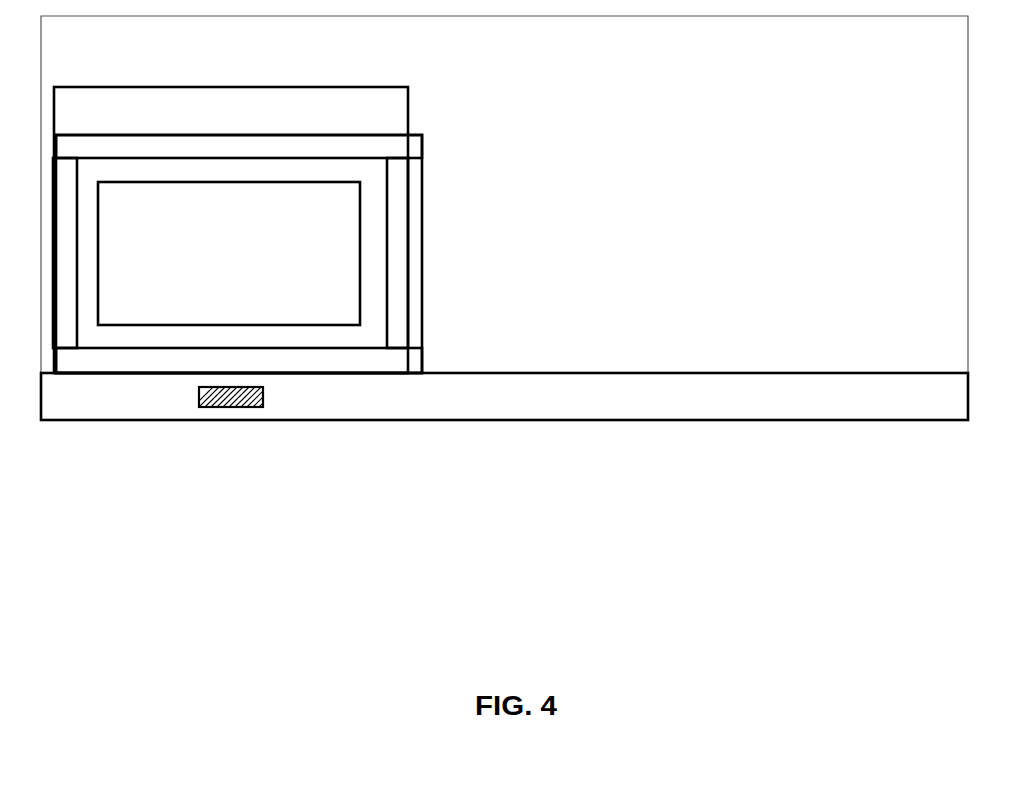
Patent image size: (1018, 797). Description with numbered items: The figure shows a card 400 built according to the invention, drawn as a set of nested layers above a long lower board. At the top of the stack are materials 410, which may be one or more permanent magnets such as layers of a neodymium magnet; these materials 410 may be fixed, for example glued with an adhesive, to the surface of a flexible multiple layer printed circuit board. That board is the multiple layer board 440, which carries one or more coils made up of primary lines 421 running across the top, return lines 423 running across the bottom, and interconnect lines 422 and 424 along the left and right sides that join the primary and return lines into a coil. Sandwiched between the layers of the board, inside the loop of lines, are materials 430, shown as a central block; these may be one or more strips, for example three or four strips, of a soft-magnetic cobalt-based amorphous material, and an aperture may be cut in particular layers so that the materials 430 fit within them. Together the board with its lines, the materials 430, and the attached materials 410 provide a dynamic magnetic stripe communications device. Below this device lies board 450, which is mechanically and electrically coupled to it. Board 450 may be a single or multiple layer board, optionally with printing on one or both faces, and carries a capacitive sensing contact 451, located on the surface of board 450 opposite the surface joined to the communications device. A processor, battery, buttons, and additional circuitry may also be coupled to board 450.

The card 400 is at (524, 218).
The materials 410 is at (54, 96).
The primary lines 421 is at (72, 143).
The interconnect lines 422 is at (68, 332).
The return lines 423 is at (148, 357).
The interconnect lines 424 is at (394, 306).
The materials 430 is at (360, 260).
The multiple layer board 440 is at (42, 236).
The board 450 is at (52, 394).
The capacitive sensing contact 451 is at (203, 403).